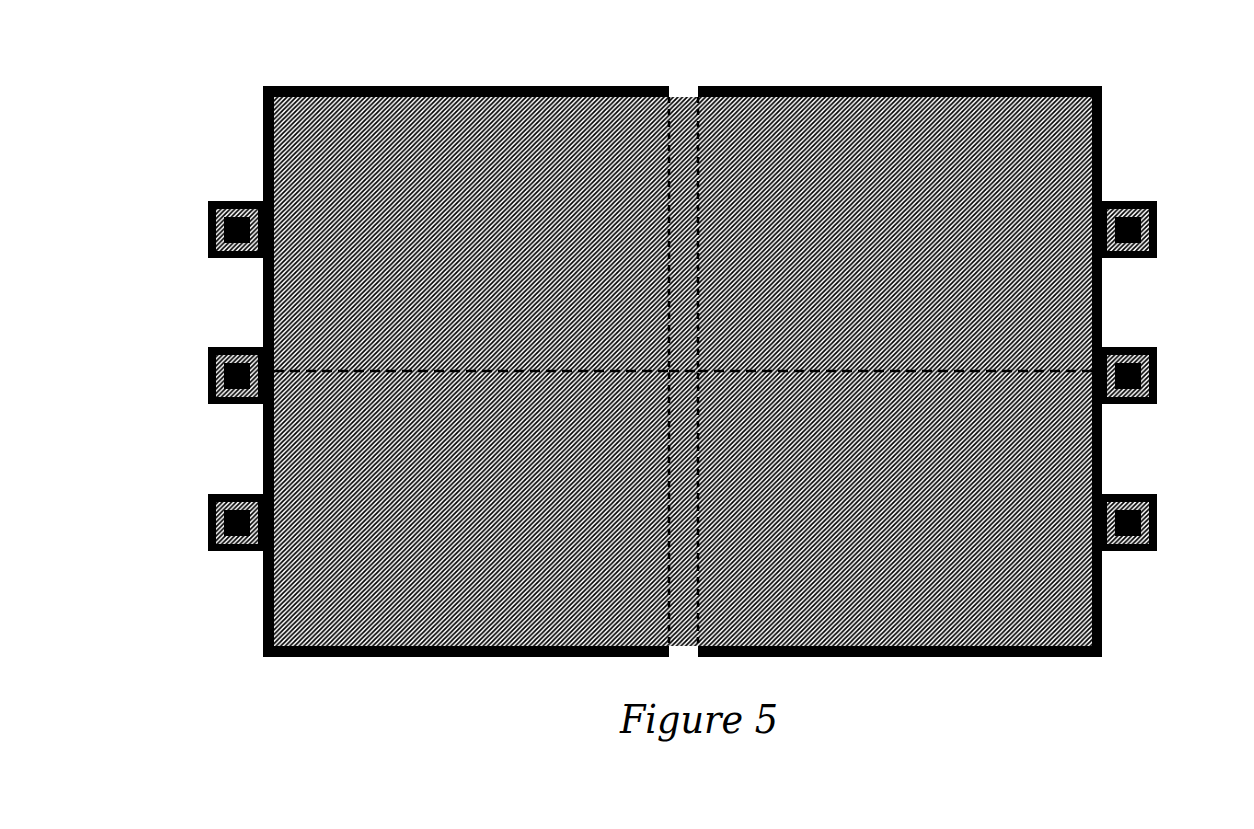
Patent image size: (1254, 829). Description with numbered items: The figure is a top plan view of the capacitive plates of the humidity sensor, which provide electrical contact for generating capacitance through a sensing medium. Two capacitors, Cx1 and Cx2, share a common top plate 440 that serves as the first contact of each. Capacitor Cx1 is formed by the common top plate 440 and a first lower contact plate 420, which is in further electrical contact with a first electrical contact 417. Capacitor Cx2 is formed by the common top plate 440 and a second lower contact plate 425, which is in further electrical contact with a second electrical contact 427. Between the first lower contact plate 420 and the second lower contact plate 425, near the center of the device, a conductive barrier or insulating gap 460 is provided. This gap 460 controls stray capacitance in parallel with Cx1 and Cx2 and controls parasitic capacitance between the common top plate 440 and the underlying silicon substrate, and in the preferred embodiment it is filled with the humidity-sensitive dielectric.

The first electrical contact 417 is at (200, 502).
The first lower contact plate 420 is at (472, 78).
The second lower contact plate 425 is at (879, 78).
The second electrical contact 427 is at (1149, 503).
The common top plate 440 is at (485, 612).
The insulating gap 460 is at (676, 78).